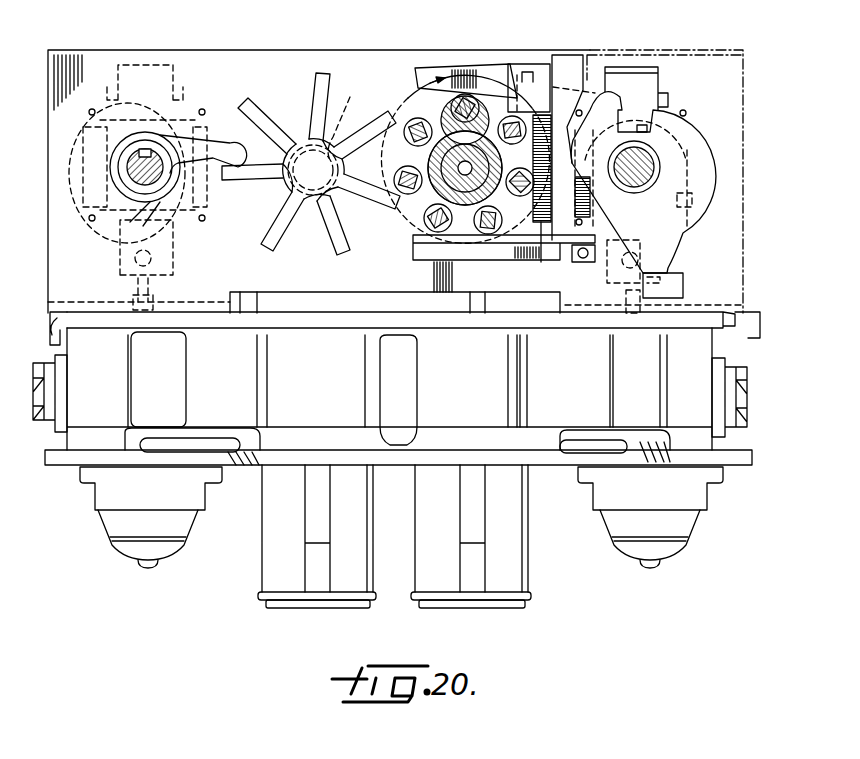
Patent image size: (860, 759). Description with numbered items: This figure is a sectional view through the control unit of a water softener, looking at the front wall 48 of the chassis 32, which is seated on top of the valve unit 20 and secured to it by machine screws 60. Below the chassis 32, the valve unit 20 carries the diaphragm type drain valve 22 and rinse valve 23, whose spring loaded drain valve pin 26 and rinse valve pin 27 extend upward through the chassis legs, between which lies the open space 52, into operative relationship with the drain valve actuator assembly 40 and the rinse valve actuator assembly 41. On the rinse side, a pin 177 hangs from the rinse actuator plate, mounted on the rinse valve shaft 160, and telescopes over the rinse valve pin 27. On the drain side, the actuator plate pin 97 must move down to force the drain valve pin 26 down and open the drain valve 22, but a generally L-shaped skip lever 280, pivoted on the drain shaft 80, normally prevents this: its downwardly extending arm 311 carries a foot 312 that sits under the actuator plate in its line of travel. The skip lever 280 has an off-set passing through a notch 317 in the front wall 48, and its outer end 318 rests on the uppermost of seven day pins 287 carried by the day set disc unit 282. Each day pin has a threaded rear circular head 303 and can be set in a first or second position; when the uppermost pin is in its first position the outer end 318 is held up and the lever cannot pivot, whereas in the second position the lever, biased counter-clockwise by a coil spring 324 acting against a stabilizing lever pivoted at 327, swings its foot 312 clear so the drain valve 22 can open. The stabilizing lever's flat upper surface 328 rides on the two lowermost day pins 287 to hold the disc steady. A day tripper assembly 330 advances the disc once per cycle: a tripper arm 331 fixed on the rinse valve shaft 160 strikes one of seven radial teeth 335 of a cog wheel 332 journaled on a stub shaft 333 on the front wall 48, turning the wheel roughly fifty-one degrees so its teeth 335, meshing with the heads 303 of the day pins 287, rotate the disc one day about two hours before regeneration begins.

The valve unit 20 is at (256, 544).
The drain valve 22 is at (692, 520).
The rinse valve 23 is at (103, 518).
The drain valve pin 26 is at (608, 312).
The rinse valve pin 27 is at (133, 296).
The chassis 32 is at (330, 295).
The drain valve actuator assembly 40 is at (646, 66).
The rinse valve actuator assembly 41 is at (138, 60).
The front wall 48 is at (185, 58).
The open space 52 is at (244, 300).
The machine screws 60 is at (52, 322).
The drain shaft 80 is at (652, 160).
The actuator plate pin 97 is at (606, 290).
The rinse valve shaft 160 is at (143, 185).
The pin 177 is at (155, 296).
The skip lever 280 is at (525, 70).
The day set disc unit 282 is at (404, 76).
The day pins 287 is at (435, 228).
The circular head 303 is at (468, 100).
The arm 311 is at (664, 274).
The foot 312 is at (685, 290).
The notch 317 is at (560, 70).
The outer end 318 is at (445, 67).
The coil spring 324 is at (603, 242).
The pivot 327 is at (476, 305).
The flat upper surface 328 is at (508, 244).
The day tripper assembly 330 is at (282, 90).
The tripper arm 331 is at (258, 104).
The cog wheel 332 is at (326, 80).
The stub shaft 333 is at (354, 123).
The teeth 335 is at (266, 232).